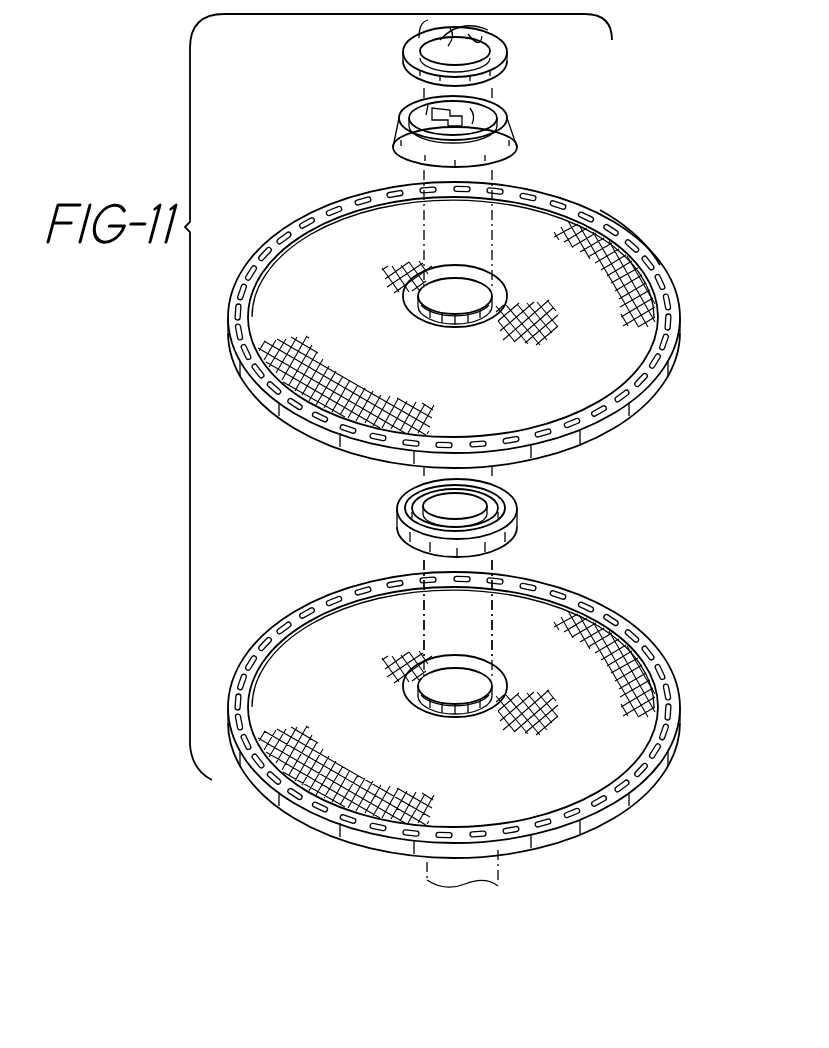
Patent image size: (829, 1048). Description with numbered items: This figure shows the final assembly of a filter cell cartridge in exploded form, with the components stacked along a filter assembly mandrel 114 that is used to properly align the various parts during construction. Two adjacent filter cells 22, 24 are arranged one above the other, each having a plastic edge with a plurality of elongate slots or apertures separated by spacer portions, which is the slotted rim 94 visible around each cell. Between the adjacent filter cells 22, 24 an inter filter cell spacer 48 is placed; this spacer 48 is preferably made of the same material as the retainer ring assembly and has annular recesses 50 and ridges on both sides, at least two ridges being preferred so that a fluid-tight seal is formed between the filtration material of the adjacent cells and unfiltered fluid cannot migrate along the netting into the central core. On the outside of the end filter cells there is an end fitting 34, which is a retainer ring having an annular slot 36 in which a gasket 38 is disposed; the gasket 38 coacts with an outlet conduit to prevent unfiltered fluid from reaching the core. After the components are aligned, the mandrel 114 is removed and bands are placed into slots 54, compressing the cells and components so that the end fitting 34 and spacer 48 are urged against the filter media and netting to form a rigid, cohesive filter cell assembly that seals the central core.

The filter cell 22 is at (479, 315).
The filter cell 24 is at (627, 613).
The end fitting 34 is at (517, 135).
The annular slot 36 is at (503, 110).
The gasket 38 is at (503, 48).
The inter filter cell spacer 48 is at (520, 525).
The annular recesses 50 is at (498, 493).
The slots 54 is at (426, 122).
The slotted rim 94 is at (600, 210).
The filter assembly mandrel 114 is at (492, 176).